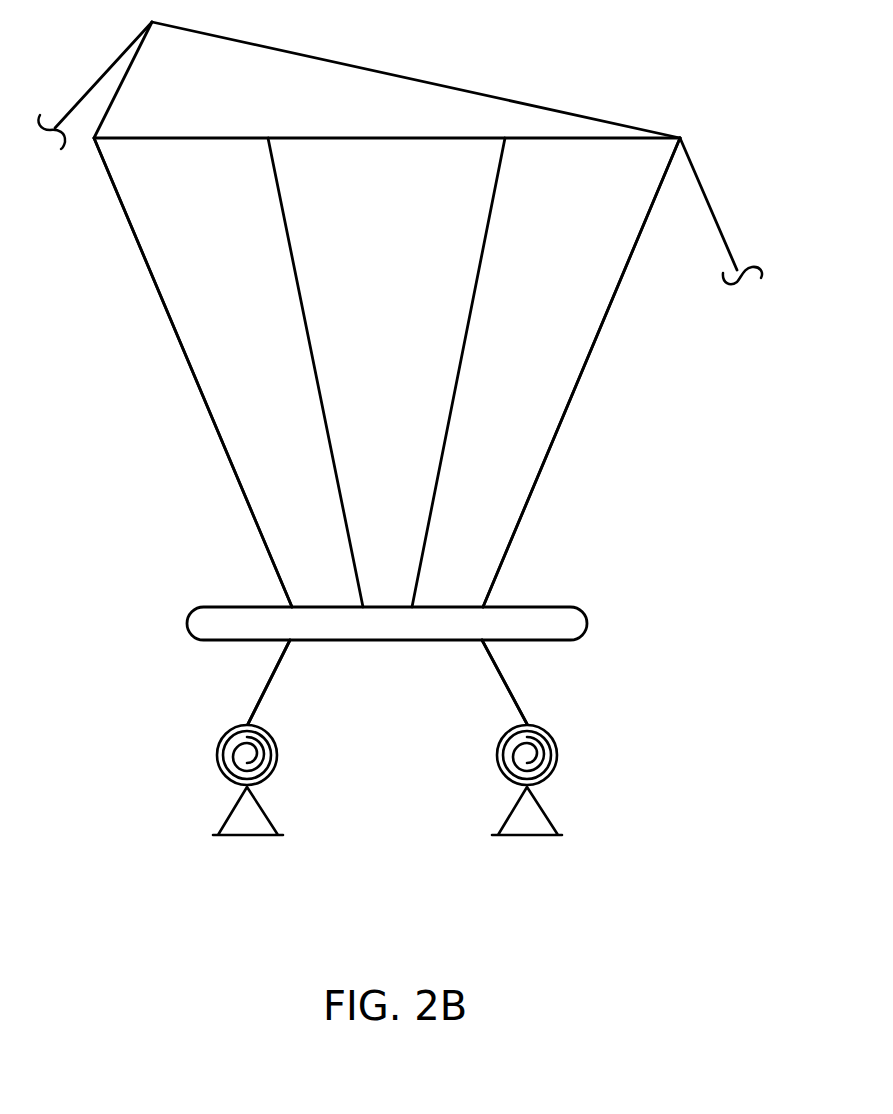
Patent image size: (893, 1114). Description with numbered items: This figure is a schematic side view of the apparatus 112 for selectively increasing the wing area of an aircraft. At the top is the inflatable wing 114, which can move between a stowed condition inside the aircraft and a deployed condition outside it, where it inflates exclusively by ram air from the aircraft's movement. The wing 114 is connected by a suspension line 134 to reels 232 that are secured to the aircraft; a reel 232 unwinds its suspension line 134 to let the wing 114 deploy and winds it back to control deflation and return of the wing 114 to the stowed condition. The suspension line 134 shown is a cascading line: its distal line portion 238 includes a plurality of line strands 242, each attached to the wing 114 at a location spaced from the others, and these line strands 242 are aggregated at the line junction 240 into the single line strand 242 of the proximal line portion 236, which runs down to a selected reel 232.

The apparatus 112 is at (762, 146).
The inflatable wing 114 is at (405, 90).
The suspension line 134 is at (700, 150).
The reel 232 is at (278, 758).
The proximal line portion 236 is at (245, 694).
The distal line portion 238 is at (182, 480).
The line junction 240 is at (528, 606).
The line strand 242 is at (194, 372).